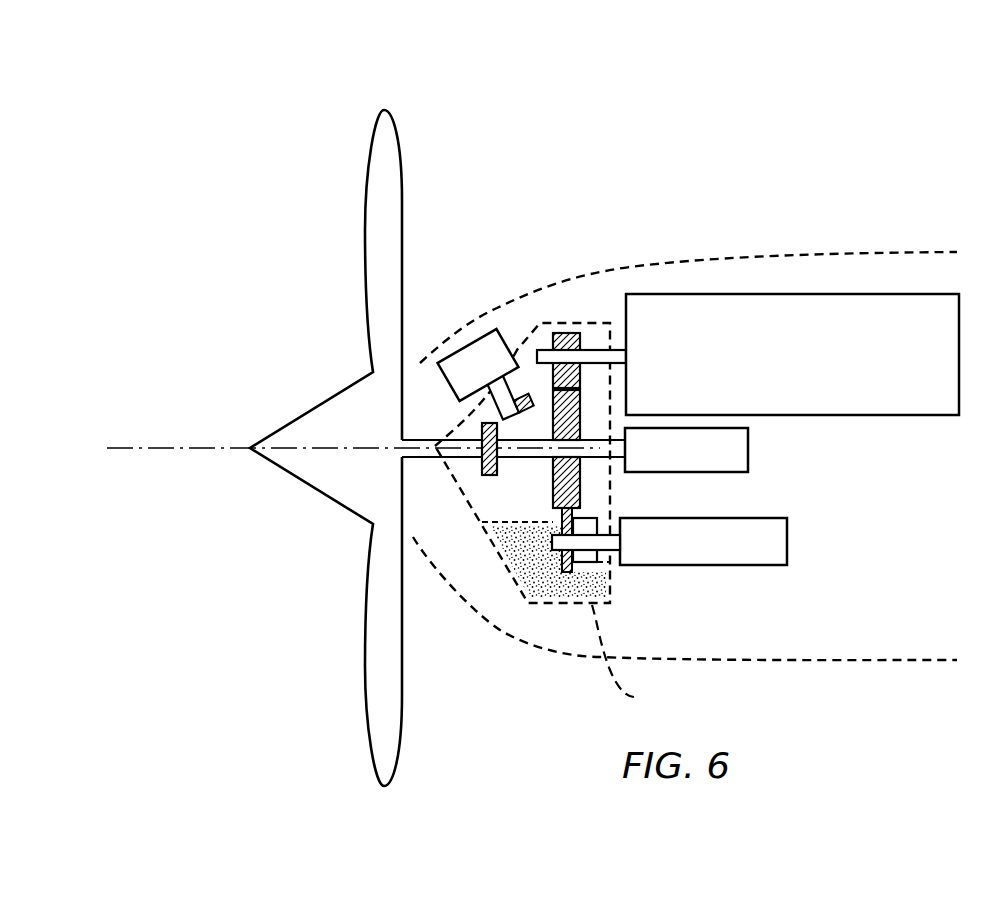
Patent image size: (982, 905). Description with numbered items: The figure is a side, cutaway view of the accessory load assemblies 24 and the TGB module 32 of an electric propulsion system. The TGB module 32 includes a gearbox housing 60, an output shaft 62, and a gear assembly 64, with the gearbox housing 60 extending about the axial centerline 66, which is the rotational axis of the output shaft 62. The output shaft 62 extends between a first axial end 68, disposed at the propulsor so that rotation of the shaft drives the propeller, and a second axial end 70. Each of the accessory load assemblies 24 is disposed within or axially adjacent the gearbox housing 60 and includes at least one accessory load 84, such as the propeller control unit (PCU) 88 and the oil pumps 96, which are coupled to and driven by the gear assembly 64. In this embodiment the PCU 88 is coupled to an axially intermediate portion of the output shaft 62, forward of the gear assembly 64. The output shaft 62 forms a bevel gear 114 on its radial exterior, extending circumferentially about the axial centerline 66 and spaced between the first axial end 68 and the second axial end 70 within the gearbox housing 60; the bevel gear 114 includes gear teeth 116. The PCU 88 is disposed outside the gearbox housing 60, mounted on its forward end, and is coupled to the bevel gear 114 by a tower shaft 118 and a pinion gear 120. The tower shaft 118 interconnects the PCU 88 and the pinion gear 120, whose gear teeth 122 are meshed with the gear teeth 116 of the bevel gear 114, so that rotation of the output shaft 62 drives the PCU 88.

The accessory load assemblies 24 is at (451, 304).
The TGB module 32 is at (512, 611).
The gearbox housing 60 is at (633, 658).
The output shaft 62 is at (433, 460).
The gear assembly 64 is at (606, 474).
The axial centerline 66 is at (203, 447).
The first axial end 68 is at (409, 476).
The second axial end 70 is at (620, 378).
The accessory load 84 is at (749, 452).
The propeller control unit (PCU) 88 is at (495, 327).
The oil pumps 96 is at (590, 558).
The bevel gear 114 is at (490, 470).
The gear teeth 116 is at (482, 466).
The tower shaft 118 is at (543, 321).
The pinion gear 120 is at (548, 421).
The gear teeth 122 is at (540, 428).